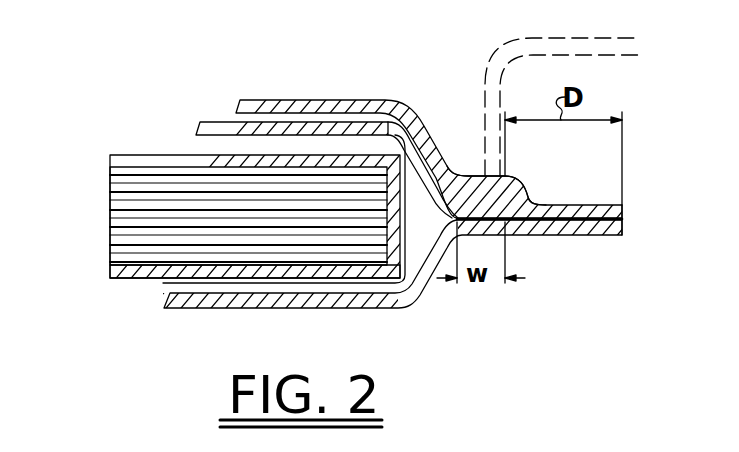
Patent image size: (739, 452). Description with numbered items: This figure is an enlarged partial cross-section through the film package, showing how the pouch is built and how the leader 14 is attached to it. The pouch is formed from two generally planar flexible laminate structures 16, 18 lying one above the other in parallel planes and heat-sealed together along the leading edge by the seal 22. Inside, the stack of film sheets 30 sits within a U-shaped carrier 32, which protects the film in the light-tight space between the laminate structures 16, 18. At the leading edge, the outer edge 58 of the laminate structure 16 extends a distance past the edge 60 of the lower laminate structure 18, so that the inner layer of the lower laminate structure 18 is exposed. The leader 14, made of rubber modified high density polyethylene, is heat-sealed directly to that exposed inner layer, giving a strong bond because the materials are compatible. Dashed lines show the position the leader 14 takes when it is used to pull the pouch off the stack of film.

The leader 14 is at (314, 99).
The laminate structure 16 is at (215, 121).
The laminate structure 18 is at (205, 306).
The seal 22 is at (505, 240).
The stack of film sheets 30 is at (111, 219).
The U-shaped carrier 32 is at (120, 280).
The outer edge of laminate structure 58 is at (606, 238).
The edge of laminate structure 60 is at (518, 178).